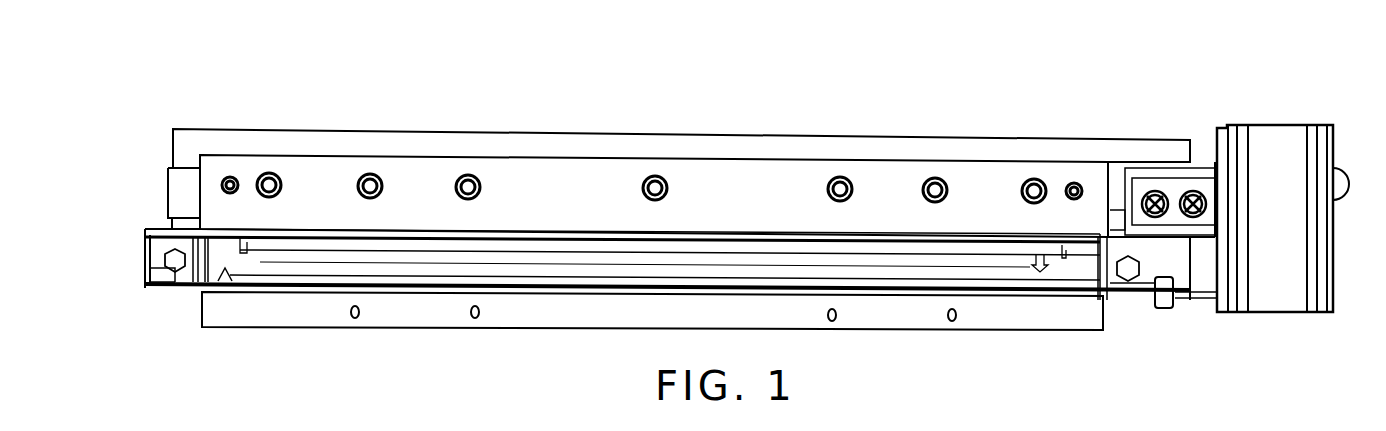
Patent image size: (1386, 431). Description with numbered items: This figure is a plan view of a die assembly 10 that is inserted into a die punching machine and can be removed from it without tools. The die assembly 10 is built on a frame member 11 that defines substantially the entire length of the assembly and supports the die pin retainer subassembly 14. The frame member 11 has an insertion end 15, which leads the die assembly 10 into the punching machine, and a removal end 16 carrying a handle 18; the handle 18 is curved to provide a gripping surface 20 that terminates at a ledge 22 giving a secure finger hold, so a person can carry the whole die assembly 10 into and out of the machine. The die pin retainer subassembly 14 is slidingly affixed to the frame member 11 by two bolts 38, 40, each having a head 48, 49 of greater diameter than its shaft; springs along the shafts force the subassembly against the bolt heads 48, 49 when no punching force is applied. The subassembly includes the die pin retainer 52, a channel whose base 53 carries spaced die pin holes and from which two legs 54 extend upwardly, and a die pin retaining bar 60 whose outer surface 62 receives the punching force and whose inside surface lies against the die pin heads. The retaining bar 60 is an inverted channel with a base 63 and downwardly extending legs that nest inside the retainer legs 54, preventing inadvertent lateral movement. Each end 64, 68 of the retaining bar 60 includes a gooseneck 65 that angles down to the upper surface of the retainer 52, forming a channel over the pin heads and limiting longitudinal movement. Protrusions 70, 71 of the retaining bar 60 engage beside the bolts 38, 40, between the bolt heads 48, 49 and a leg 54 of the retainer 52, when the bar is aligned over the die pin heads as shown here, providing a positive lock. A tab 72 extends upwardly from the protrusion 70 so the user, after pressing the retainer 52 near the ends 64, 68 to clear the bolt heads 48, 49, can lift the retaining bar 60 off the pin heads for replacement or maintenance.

The die assembly 10 is at (950, 110).
The frame member 11 is at (1175, 148).
The die pin retainer subassembly 14 is at (1124, 282).
The insertion end 15 is at (160, 340).
The removal end 16 is at (1193, 345).
The handle 18 is at (1292, 312).
The gripping surface 20 is at (1300, 170).
The ledge 22 is at (1325, 128).
The bolt 38 is at (1180, 300).
The bolt 40 is at (157, 260).
The bolt head 48 is at (1118, 292).
The bolt head 49 is at (173, 266).
The die pin retainer 52 is at (145, 243).
The base 53 is at (152, 267).
The legs 54 is at (332, 233).
The die pin retaining bar 60 is at (478, 300).
The outer surface 62 is at (843, 268).
The base 63 is at (583, 262).
The end 64 is at (1085, 354).
The goosenecks 65 is at (209, 237).
The end 68 is at (236, 345).
The protrusion 70 is at (1145, 300).
The protrusion 71 is at (157, 273).
The tab 72 is at (1180, 310).